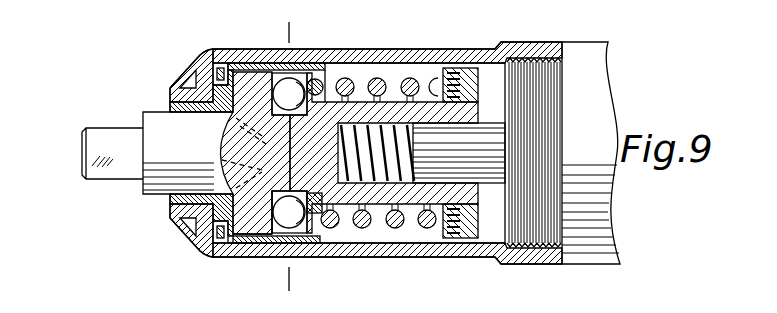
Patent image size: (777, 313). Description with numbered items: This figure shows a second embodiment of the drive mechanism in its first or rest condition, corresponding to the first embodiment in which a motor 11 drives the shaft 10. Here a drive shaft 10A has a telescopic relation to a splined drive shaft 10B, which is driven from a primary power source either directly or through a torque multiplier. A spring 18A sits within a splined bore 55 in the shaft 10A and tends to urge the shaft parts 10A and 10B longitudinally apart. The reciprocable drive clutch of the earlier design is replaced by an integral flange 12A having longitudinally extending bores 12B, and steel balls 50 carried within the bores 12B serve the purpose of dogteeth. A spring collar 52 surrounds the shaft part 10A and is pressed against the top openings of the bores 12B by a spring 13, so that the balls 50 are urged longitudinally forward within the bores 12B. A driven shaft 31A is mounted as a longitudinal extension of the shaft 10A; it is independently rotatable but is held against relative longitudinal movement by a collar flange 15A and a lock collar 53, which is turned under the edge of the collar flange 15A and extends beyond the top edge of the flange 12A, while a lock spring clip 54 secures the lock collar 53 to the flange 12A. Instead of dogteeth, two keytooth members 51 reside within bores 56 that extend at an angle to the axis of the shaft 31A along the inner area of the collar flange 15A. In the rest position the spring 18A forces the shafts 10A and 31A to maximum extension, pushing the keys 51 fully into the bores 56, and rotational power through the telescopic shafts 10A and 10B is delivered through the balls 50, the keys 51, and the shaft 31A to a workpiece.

The drive shaft 10 is at (284, 19).
The drive shaft 10A is at (415, 190).
The splined drive shaft 10B is at (496, 185).
The motor 11 is at (590, 38).
The integral flange 12A is at (296, 230).
The longitudinally extending bores 12B is at (302, 239).
The spring 13 is at (418, 86).
The collar flange 15A is at (250, 228).
The spring 18A is at (390, 140).
The driven shaft 31A is at (135, 182).
The steel balls 50 is at (291, 76).
The keytooth members 51 is at (228, 114).
The spring collar 52 is at (322, 237).
The lock collar 53 is at (228, 48).
The lock spring clip 54 is at (305, 67).
The splined bore 55 is at (382, 185).
The longitudinal bores 56 is at (222, 153).